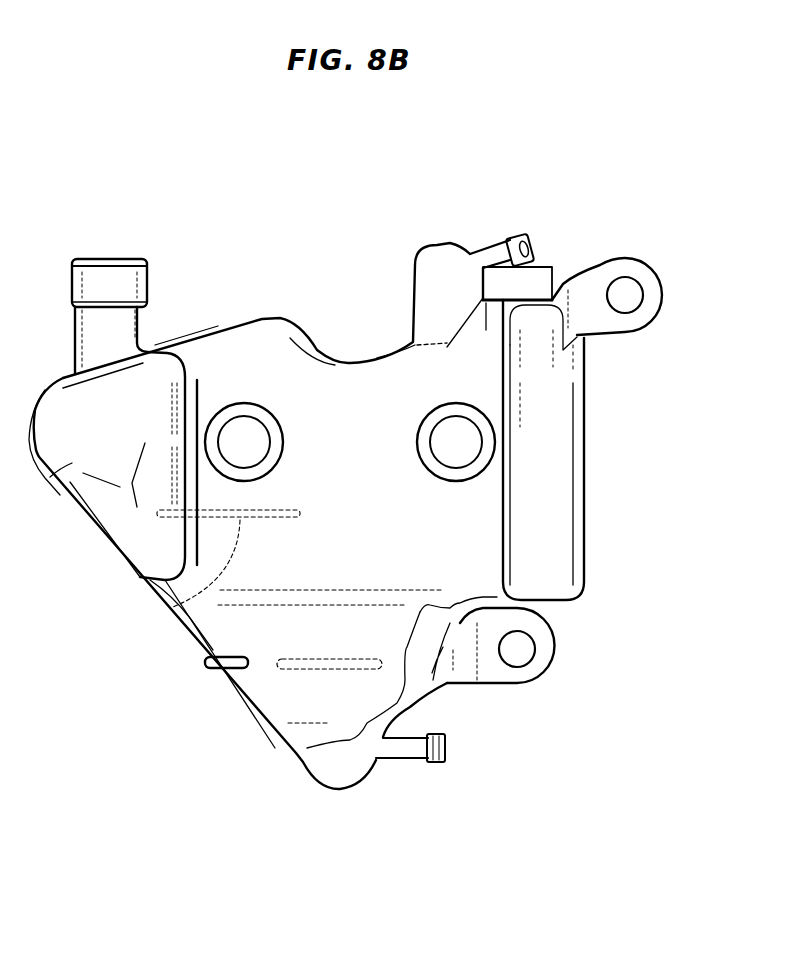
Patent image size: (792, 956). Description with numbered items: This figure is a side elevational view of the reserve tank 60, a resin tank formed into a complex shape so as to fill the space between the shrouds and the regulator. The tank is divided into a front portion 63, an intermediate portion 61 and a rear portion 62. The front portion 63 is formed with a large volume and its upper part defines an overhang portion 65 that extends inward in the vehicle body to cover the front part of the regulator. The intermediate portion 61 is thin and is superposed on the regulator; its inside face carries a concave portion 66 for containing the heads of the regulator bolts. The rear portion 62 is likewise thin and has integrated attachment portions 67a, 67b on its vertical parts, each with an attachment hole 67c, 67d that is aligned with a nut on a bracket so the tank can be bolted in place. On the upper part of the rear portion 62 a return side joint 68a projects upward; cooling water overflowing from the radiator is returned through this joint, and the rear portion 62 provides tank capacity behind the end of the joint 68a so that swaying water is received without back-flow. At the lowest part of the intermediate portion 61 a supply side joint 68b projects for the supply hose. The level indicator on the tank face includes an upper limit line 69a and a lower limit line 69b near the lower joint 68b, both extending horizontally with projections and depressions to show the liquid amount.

The reserve tank 60 is at (397, 220).
The intermediate portion 61 is at (360, 400).
The rear portion 62 is at (560, 413).
The front portion 63 is at (205, 320).
The overhang portion 65 is at (103, 259).
The concave portion 66 is at (250, 430).
The attachment portion 67a is at (657, 297).
The attachment portion 67b is at (543, 665).
The attachment hole 67c is at (637, 283).
The attachment hole 67d is at (523, 647).
The return side joint 68a is at (513, 232).
The supply side joint 68b is at (425, 760).
The upper limit line 69a is at (185, 605).
The lower limit line 69b is at (220, 672).